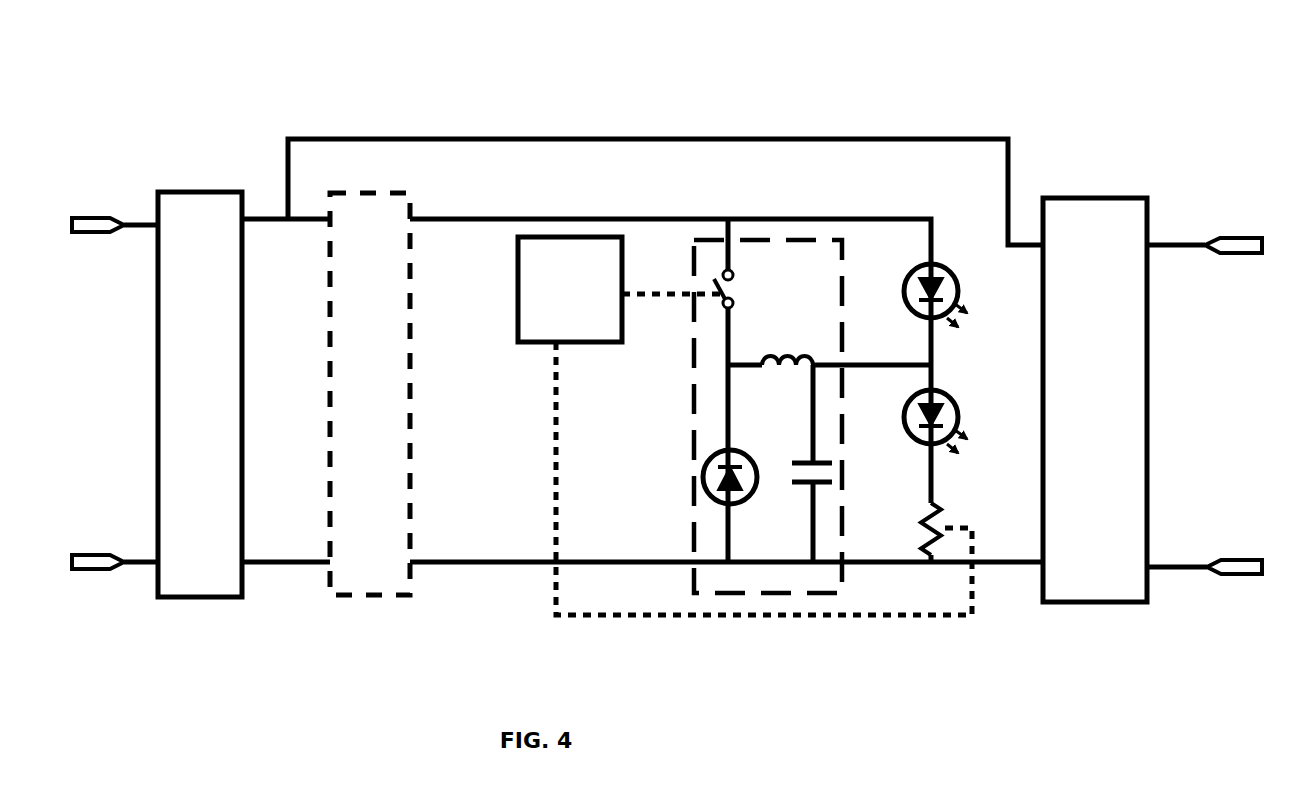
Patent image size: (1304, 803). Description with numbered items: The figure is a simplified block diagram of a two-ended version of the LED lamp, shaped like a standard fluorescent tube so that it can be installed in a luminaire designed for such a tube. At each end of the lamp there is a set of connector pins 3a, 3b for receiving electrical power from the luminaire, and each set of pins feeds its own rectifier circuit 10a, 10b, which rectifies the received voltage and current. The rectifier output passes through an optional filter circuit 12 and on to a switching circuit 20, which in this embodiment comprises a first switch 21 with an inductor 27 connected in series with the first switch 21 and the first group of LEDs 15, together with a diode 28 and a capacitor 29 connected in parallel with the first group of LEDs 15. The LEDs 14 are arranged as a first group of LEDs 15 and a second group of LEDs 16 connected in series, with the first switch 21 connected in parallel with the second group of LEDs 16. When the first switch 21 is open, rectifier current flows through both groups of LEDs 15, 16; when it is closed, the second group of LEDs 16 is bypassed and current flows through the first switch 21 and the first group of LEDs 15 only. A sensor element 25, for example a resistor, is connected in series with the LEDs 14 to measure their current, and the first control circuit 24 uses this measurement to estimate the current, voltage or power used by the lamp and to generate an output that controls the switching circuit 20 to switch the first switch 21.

The LEDs 14 is at (944, 93).
The rectifier circuit 10a is at (193, 190).
The rectifier circuit 10b is at (1118, 198).
The connector pins 3a is at (77, 217).
The connector pins 3b is at (1233, 238).
The filter circuit 12 is at (374, 192).
The first control circuit 24 is at (518, 323).
The switching circuit 20 is at (848, 268).
The first switch 21 is at (738, 282).
The inductor 27 is at (776, 353).
The diode 28 is at (735, 450).
The capacitor 29 is at (797, 487).
The second group of LEDs 16 is at (950, 270).
The first group of LEDs 15 is at (950, 400).
The sensor element 25 is at (943, 518).